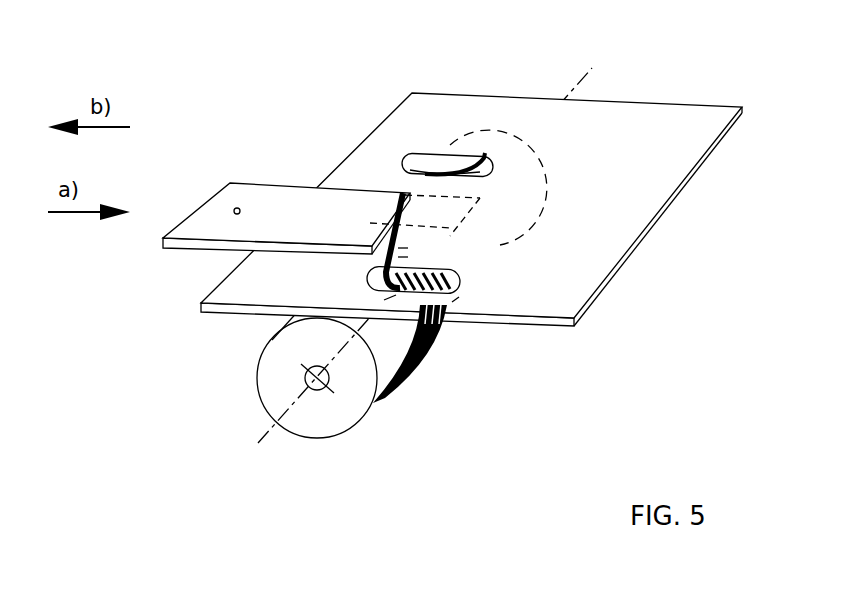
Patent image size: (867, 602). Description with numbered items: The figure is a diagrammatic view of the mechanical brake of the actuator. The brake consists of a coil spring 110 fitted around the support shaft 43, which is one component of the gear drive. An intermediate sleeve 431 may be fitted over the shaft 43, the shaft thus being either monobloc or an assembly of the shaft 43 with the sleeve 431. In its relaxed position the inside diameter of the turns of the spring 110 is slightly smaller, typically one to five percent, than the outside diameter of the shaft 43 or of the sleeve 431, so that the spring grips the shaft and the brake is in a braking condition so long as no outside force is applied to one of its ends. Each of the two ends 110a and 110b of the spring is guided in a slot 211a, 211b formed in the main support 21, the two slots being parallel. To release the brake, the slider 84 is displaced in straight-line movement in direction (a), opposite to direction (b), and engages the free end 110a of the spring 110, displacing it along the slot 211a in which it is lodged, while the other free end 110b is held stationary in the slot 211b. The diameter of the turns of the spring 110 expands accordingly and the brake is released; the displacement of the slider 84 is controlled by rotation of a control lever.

The main support 21 is at (485, 234).
The slot 211a is at (465, 282).
The slot 211b is at (490, 158).
The slider 84 is at (236, 208).
The coil spring 110 is at (393, 342).
The free end of the spring 110a is at (402, 192).
The free end of the spring 110b is at (483, 156).
The support shaft 43 is at (424, 290).
The intermediate sleeve 431 is at (351, 418).